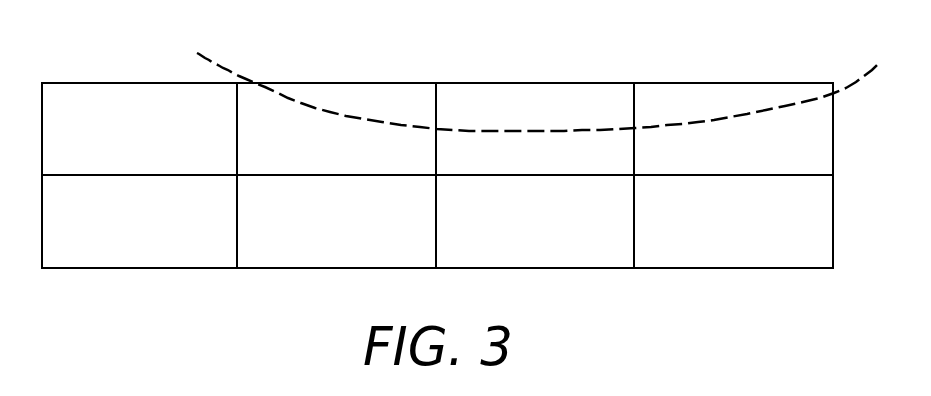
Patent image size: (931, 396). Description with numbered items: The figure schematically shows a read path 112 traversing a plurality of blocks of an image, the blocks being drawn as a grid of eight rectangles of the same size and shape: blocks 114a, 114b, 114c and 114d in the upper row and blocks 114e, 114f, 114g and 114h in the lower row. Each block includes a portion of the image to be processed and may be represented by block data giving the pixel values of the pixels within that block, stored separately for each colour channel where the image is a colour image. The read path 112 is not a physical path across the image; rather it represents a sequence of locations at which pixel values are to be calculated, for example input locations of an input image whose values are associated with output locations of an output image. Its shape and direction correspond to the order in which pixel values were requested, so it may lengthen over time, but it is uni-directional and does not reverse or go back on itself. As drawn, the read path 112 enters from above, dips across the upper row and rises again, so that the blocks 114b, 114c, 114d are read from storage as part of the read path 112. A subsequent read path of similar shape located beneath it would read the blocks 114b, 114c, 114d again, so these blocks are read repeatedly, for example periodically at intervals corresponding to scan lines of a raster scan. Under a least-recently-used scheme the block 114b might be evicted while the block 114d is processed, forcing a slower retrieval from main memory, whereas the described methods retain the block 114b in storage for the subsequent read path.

The read path 112 is at (218, 65).
The block 114a is at (108, 137).
The block 114b is at (268, 165).
The block 114c is at (508, 168).
The block 114d is at (758, 165).
The block 114e is at (109, 230).
The block 114f is at (302, 230).
The block 114g is at (504, 230).
The block 114h is at (697, 230).